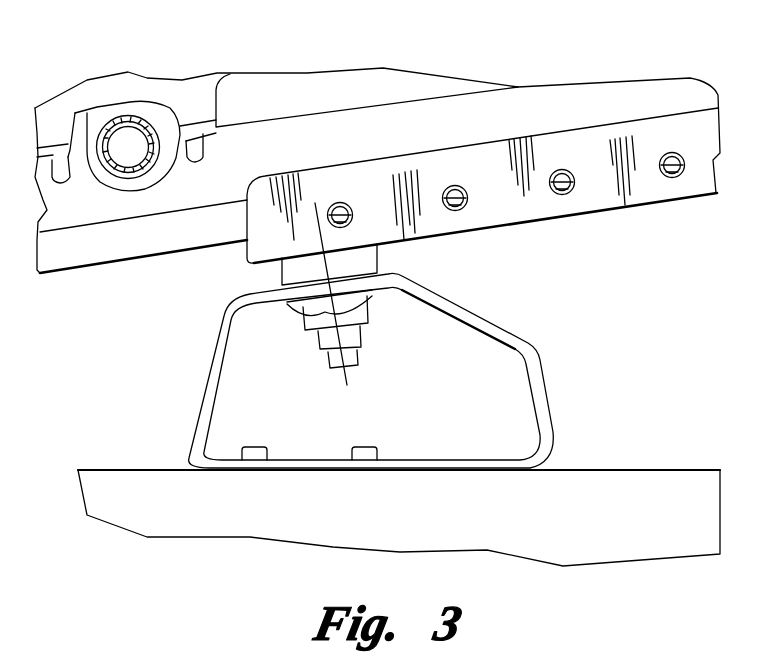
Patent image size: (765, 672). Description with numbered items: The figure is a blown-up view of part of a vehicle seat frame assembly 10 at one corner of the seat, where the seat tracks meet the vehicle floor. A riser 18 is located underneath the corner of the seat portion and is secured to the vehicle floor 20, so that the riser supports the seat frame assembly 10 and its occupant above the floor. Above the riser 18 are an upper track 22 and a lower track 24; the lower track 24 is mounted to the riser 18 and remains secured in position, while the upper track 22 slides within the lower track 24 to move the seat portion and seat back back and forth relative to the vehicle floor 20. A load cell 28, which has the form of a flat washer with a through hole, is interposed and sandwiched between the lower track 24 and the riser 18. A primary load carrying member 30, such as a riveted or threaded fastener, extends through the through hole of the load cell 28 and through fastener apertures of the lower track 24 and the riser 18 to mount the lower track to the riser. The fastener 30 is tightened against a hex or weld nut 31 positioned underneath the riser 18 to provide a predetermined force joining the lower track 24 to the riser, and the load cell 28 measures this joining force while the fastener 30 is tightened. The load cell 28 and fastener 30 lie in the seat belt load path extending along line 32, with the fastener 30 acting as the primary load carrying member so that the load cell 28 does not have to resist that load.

The vehicle seat frame assembly 10 is at (258, 58).
The riser 18 is at (546, 390).
The vehicle floor 20 is at (145, 470).
The upper track 22 is at (168, 193).
The lower track 24 is at (523, 203).
The load cell 28 is at (379, 260).
The primary load carrying member 30 is at (352, 337).
The hex or weld nut 31 is at (357, 312).
The load path line 32 is at (350, 373).